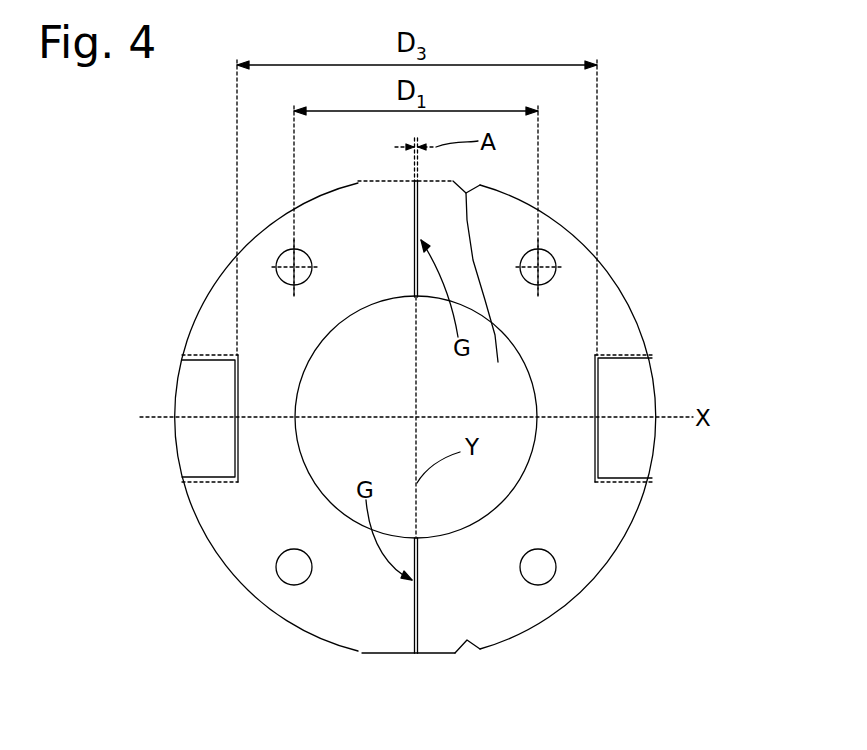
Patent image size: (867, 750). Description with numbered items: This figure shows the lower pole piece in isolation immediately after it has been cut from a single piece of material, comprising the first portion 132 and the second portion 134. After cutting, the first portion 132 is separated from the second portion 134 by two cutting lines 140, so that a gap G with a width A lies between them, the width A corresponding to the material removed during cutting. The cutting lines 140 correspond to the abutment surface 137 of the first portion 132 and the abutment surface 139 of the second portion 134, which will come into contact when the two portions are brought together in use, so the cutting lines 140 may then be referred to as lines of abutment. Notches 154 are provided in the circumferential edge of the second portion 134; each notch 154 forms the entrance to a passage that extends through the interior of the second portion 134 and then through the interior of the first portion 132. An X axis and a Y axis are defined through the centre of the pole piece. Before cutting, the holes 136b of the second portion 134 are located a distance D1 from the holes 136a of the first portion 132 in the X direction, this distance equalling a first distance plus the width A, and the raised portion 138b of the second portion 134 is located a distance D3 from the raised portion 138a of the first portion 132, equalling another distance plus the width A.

The first portion 132 is at (220, 322).
The second portion 134 is at (615, 313).
The holes of the first portion 136a is at (288, 274).
The holes of the second portion 136b is at (545, 275).
The abutment surface of the first portion 137 is at (418, 281).
The raised portion of the first portion 138a is at (198, 387).
The raised portion of the second portion 138b is at (632, 392).
The abutment surface of the second portion 139 is at (417, 195).
The cutting lines 140 is at (413, 257).
The notches 154 is at (530, 705).